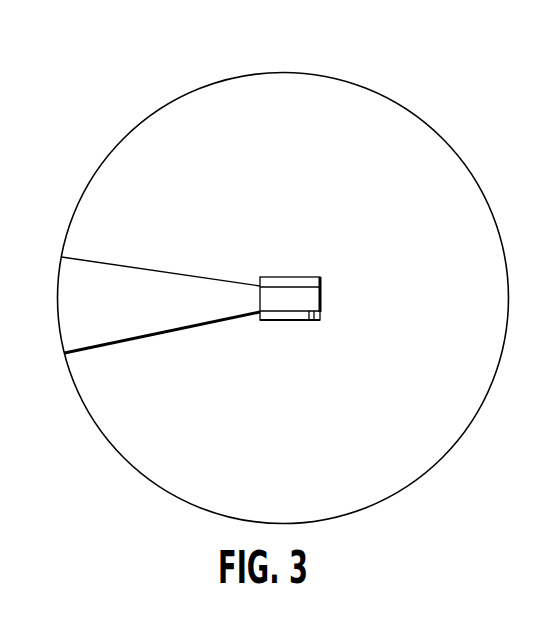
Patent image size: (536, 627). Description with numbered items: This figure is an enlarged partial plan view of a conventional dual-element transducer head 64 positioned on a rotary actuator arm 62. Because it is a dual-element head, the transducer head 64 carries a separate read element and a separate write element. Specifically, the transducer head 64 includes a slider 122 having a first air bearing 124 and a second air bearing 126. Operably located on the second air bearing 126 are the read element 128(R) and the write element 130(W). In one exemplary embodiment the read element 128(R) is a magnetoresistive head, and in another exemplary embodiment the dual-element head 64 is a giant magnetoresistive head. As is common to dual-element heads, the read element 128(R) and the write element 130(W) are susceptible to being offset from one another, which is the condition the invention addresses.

The rotary actuator arm 62 is at (113, 263).
The transducer head 64 is at (309, 273).
The slider 122 is at (321, 300).
The first air bearing 124 is at (277, 277).
The second air bearing 126 is at (270, 322).
The read element 128 is at (308, 322).
The write element 130 is at (314, 322).